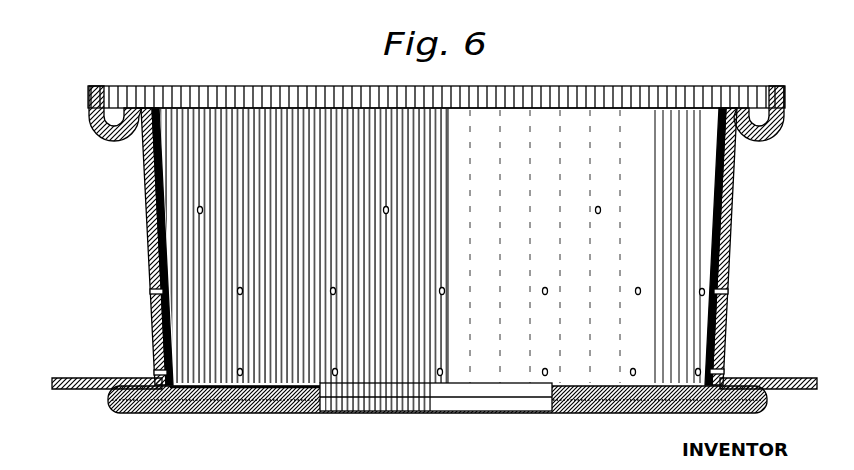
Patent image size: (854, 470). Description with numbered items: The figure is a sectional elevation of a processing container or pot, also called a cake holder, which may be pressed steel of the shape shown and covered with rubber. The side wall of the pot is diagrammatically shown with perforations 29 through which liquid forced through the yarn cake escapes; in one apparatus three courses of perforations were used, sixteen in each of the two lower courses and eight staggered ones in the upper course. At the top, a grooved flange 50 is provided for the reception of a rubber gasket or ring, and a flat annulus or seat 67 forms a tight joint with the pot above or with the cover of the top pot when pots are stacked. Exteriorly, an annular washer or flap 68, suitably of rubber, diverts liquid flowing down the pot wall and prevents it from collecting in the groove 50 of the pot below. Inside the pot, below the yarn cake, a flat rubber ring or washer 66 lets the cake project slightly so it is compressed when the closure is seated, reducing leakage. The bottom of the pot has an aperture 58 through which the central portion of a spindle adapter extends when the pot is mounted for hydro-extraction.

The perforations 29 is at (156, 371).
The grooved flange 50 is at (760, 140).
The aperture 58 is at (539, 412).
The ring or washer 66 is at (290, 386).
The flat annulus or seat 67 is at (146, 117).
The annular washer or flap 68 is at (66, 378).